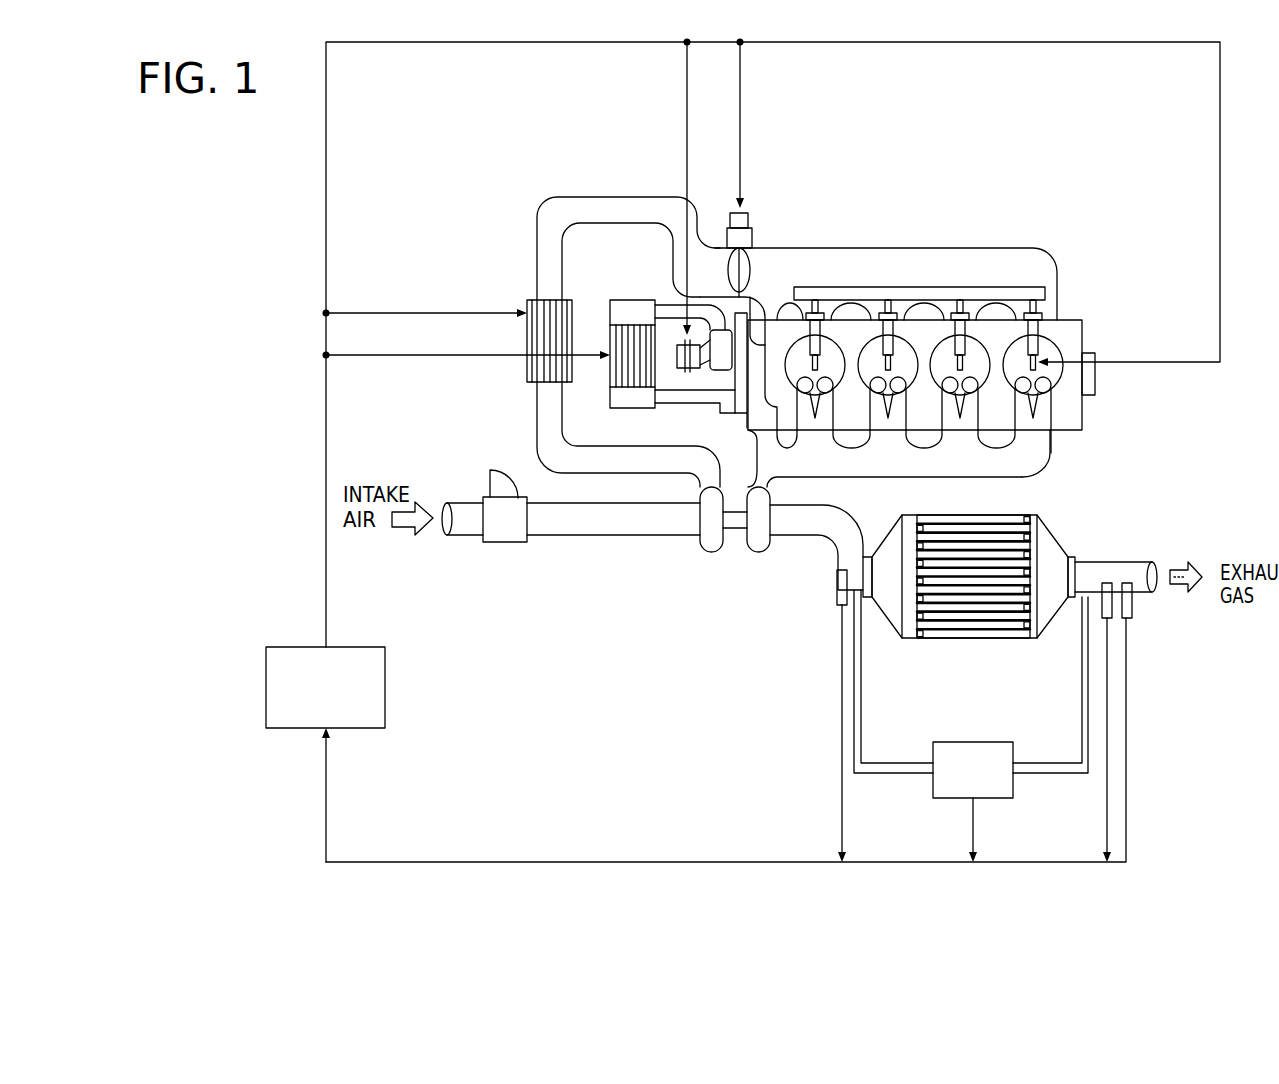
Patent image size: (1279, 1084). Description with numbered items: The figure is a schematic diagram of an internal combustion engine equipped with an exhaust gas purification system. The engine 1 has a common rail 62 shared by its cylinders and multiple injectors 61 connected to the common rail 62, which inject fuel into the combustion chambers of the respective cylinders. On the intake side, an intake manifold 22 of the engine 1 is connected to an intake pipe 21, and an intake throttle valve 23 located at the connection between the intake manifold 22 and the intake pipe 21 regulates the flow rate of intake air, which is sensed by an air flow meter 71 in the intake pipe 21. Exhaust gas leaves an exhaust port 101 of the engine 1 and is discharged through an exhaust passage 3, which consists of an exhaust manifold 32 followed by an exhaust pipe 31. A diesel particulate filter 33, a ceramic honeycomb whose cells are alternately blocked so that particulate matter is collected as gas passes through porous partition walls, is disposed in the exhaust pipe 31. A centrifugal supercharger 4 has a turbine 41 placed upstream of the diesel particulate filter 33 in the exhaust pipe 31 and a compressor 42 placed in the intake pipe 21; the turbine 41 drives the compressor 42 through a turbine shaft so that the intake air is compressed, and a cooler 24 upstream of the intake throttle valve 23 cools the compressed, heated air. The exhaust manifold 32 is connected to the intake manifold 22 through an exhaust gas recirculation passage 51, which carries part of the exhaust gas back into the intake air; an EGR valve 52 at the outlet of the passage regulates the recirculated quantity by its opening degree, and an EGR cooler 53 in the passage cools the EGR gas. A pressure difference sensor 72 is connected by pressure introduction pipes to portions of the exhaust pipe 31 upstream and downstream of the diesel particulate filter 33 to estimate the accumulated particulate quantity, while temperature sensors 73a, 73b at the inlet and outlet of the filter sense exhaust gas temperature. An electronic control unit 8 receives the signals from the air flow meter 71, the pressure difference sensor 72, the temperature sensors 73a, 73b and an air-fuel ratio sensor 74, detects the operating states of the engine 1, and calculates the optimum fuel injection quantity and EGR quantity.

The engine 1 is at (1092, 420).
The exhaust passage 3 is at (1030, 497).
The centrifugal supercharger 4 is at (735, 569).
The electronic control unit 8 is at (386, 692).
The intake pipe 21 is at (610, 198).
The intake manifold 22 is at (1024, 249).
The intake throttle valve 23 is at (762, 226).
The cooler 24 is at (527, 364).
The exhaust pipe 31 is at (826, 552).
The exhaust manifold 32 is at (1048, 448).
The diesel particulate filter 33 is at (944, 620).
The turbine 41 is at (759, 548).
The compressor 42 is at (711, 553).
The exhaust gas recirculation passage 51 is at (657, 412).
The EGR valve 52 is at (700, 353).
The EGR cooler 53 is at (627, 300).
The injector 61 is at (1038, 348).
The common rail 62 is at (1022, 287).
The air flow meter 71 is at (503, 542).
The pressure difference sensor 72 is at (1003, 740).
The temperature sensor 73a is at (837, 595).
The temperature sensor 73b is at (1108, 622).
The air-fuel ratio sensor 74 is at (1133, 607).
The exhaust port 101 is at (1058, 377).